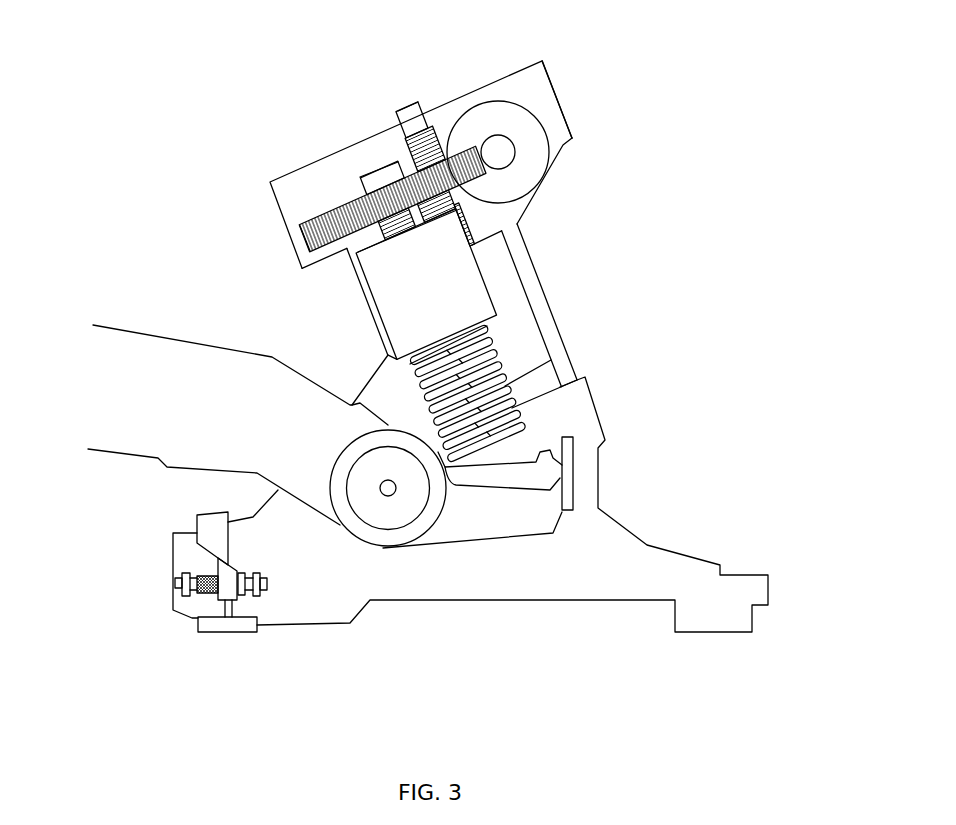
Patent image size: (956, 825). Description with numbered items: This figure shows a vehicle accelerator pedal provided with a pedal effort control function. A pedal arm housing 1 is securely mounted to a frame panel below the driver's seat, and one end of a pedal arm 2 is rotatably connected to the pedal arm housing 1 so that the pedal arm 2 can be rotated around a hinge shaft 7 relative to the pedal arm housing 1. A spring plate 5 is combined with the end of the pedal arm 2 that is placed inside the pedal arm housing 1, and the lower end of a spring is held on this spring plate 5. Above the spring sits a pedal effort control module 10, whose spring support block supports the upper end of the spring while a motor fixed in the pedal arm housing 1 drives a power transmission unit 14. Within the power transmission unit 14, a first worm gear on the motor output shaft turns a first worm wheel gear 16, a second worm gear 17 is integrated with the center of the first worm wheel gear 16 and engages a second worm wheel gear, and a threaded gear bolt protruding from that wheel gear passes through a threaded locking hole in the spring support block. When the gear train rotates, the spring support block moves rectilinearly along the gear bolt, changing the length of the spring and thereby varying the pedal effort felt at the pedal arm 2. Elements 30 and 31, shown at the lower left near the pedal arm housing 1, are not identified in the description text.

The pedal arm housing 1 is at (600, 472).
The pedal arm 2 is at (147, 352).
The spring plate 5 is at (500, 478).
The hinge shaft 7 is at (394, 520).
The pedal effort control module 10 is at (292, 213).
The power transmission unit 14 is at (548, 115).
The first worm wheel gear 16 is at (485, 112).
The second worm gear 17 is at (497, 156).
The mounting plate 30 is at (242, 632).
The stopper bracket 31 is at (208, 523).